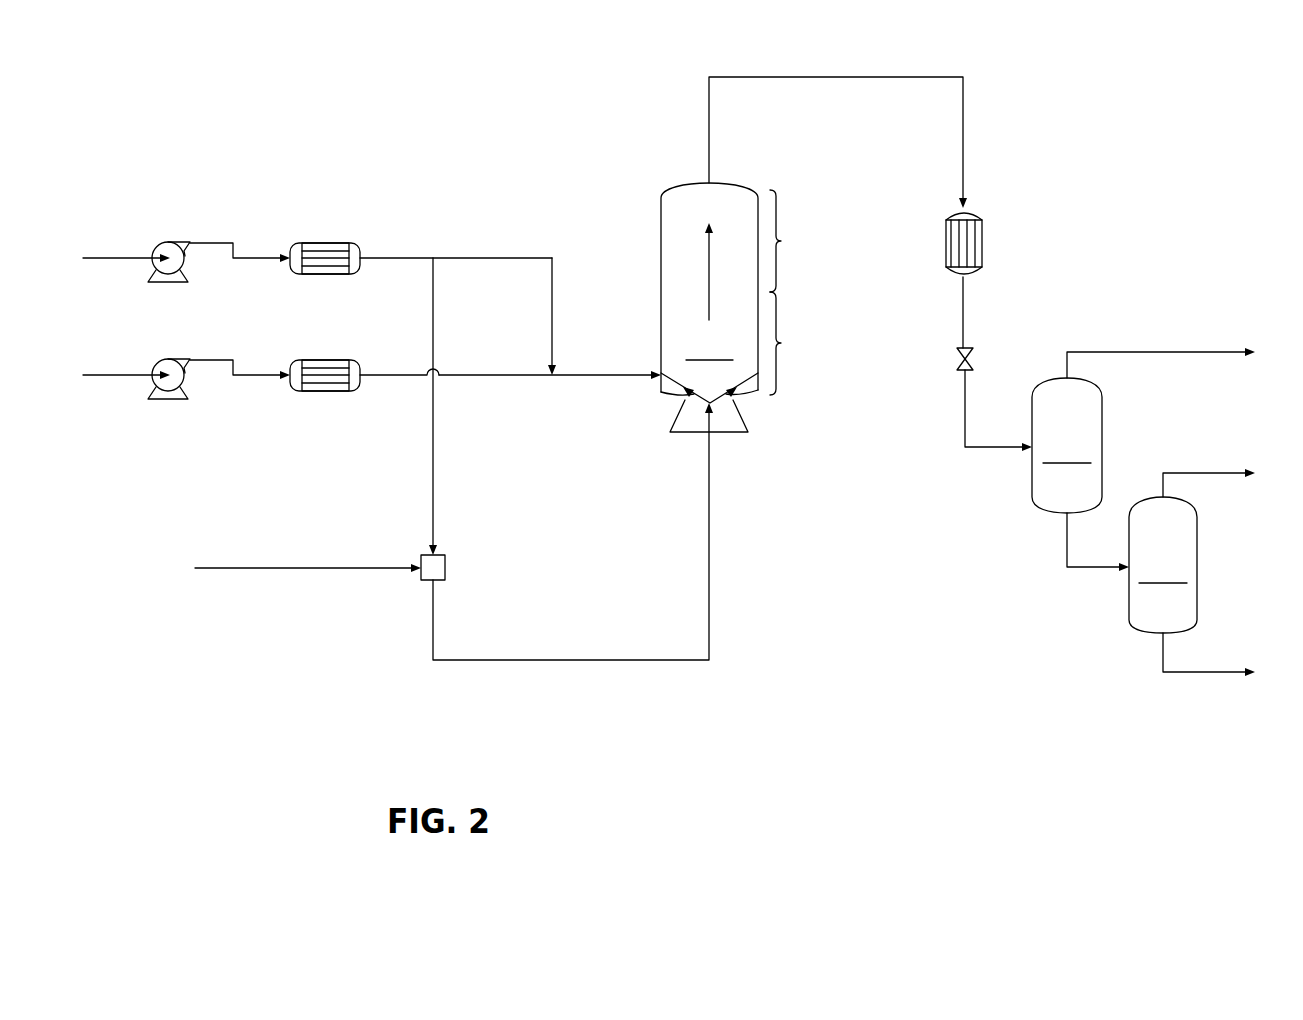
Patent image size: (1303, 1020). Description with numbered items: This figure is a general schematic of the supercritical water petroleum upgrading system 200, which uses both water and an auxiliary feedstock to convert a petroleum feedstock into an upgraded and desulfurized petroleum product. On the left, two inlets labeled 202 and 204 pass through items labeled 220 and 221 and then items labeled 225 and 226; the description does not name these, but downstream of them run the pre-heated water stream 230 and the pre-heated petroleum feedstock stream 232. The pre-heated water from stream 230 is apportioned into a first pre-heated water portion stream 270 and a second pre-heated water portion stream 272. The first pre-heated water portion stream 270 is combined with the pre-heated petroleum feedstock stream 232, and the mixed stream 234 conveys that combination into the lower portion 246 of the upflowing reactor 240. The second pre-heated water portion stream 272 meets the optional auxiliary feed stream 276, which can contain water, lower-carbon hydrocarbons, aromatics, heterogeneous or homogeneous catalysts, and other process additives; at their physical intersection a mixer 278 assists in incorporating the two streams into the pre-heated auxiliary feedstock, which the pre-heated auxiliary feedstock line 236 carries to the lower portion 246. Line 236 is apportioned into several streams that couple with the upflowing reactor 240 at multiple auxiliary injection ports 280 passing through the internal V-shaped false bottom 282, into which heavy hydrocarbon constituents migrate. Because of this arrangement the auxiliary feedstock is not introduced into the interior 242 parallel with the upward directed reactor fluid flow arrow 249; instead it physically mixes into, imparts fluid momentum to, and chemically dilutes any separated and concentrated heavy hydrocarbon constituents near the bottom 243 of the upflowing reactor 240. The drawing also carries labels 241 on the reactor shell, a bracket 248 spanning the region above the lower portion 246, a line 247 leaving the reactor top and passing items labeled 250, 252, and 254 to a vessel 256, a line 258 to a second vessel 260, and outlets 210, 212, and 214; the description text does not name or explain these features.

The supercritical water petroleum upgrading system 200 is at (236, 76).
The first feed stream 202 is at (137, 258).
The second feed stream 204 is at (137, 375).
The first product stream 210 is at (1195, 352).
The second product stream 212 is at (1195, 473).
The third product stream 214 is at (1195, 672).
The first pump 220 is at (173, 242).
The second pump 221 is at (173, 359).
The first heat exchanger 225 is at (320, 243).
The second heat exchanger 226 is at (320, 360).
The pre-heated water stream 230 is at (378, 257).
The pre-heated petroleum feedstock stream 232 is at (398, 378).
The mixed stream 234 is at (612, 375).
The pre-heated auxiliary feedstock line 236 is at (603, 660).
The upflowing reactor 240 is at (665, 267).
The reactor wall 241 is at (682, 187).
The interior 242 is at (709, 345).
The bottom 243 is at (743, 398).
The lower portion 246 is at (781, 343).
The overhead line 247 is at (847, 77).
The upper reactor zone 248 is at (781, 241).
The upward directed reactor fluid flow arrow 249 is at (709, 290).
The condenser 250 is at (982, 240).
The valve 252 is at (957, 355).
The separator feed line 254 is at (1000, 452).
The first separator 256 is at (1067, 445).
The separator bottoms line 258 is at (1097, 572).
The second separator 260 is at (1163, 565).
The first pre-heated water portion stream 270 is at (515, 257).
The second pre-heated water portion stream 272 is at (433, 482).
The optional auxiliary feed stream 276 is at (273, 568).
The mixer 278 is at (447, 568).
The auxiliary injection ports 280 is at (687, 437).
The V-shaped false bottom 282 is at (703, 448).